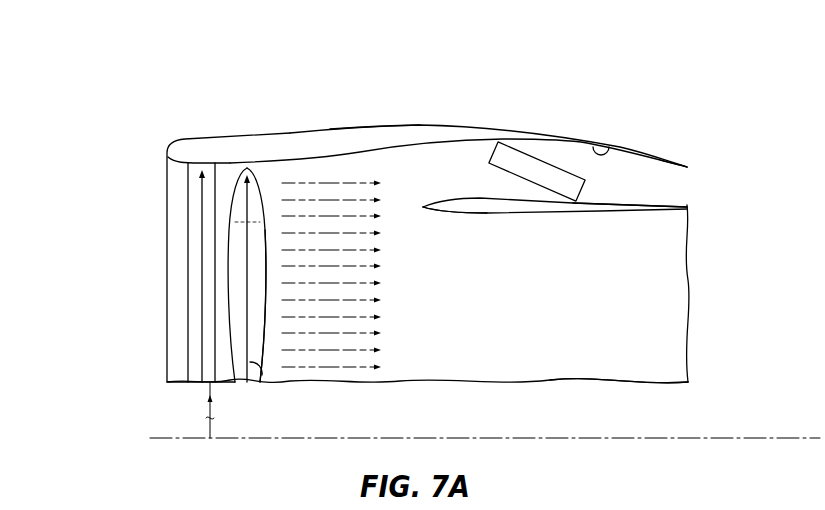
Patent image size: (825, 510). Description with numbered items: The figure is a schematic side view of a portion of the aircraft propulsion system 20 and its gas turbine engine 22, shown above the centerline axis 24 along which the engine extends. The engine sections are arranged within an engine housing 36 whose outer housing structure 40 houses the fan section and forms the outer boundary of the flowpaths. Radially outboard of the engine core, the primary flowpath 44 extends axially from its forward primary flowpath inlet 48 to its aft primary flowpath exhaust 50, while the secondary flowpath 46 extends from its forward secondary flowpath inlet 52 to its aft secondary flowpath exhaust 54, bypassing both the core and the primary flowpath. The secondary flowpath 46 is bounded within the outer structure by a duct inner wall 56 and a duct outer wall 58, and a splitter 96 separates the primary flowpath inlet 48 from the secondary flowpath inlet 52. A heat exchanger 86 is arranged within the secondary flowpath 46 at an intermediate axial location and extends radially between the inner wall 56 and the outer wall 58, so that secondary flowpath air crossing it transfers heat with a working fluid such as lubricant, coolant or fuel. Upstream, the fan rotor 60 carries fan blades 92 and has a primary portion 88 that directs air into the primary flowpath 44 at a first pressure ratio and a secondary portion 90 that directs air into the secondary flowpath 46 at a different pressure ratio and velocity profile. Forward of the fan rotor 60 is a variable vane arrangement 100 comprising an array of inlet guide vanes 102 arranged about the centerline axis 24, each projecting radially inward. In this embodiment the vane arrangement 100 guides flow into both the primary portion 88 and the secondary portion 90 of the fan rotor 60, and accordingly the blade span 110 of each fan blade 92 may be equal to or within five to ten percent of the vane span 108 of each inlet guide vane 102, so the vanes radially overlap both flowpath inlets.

The propulsion system 20 is at (198, 213).
The gas turbine engine 22 is at (193, 83).
The centerline axis 24 is at (157, 438).
The engine housing 36 is at (448, 97).
The outer housing structure 40 is at (352, 115).
The primary flowpath 44 is at (490, 315).
The secondary flowpath 46 is at (490, 196).
The primary flowpath inlet 48 is at (440, 310).
The primary flowpath exhaust 50 is at (687, 220).
The secondary flowpath inlet 52 is at (437, 183).
The secondary flowpath exhaust 54 is at (685, 187).
The duct inner wall 56 is at (620, 201).
The duct outer wall 58 is at (608, 147).
The fan rotor 60 is at (201, 362).
The heat exchanger 86 is at (545, 160).
The primary portion of the fan rotor 88 is at (270, 342).
The secondary portion of the fan rotor 90 is at (260, 180).
The fan blade 92 is at (222, 332).
The splitter 96 is at (457, 213).
The variable vane arrangement 100 is at (180, 205).
The inlet guide vane 102 is at (188, 248).
The vane span 108 is at (188, 363).
The blade span 110 is at (262, 368).